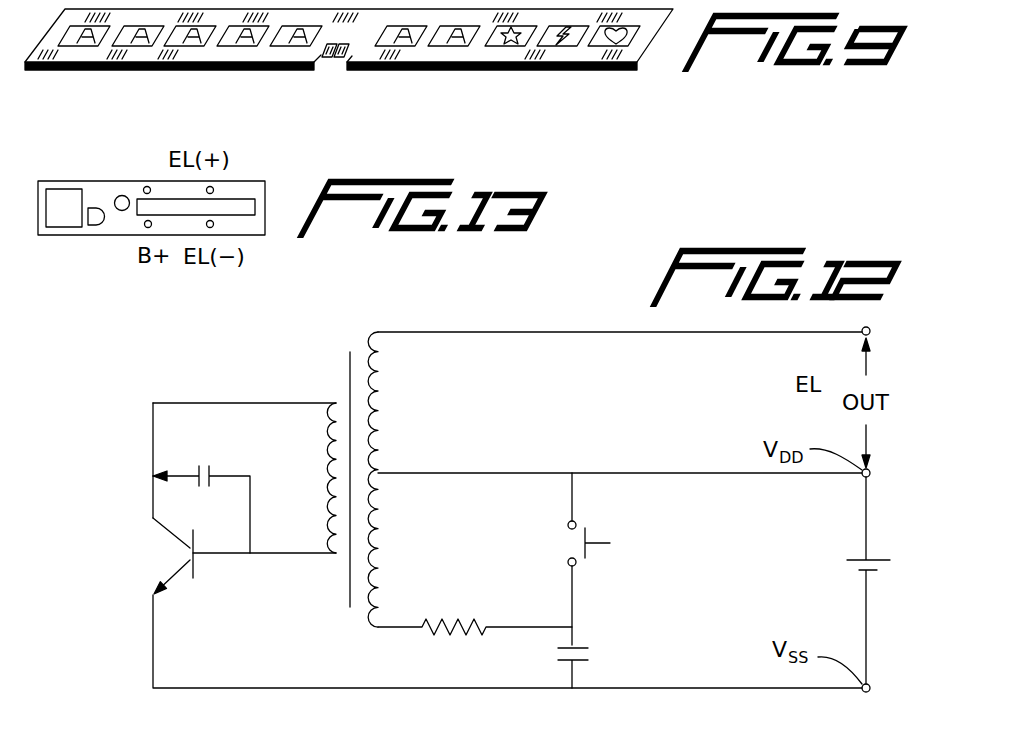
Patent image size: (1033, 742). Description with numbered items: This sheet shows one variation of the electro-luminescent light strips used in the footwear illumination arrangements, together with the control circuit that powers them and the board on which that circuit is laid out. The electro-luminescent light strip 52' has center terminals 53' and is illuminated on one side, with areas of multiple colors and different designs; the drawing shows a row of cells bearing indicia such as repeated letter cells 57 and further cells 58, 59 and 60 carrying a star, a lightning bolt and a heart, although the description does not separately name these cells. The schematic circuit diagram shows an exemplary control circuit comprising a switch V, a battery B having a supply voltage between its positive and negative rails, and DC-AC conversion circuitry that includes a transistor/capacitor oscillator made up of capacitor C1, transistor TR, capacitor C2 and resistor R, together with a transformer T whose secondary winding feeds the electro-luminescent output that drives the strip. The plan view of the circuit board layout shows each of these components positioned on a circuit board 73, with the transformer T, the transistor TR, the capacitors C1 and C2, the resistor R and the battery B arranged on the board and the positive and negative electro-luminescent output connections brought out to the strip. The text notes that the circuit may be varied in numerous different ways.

In FIG. 9, the electro-luminescent light strip 52' is at (377, 67).
In FIG. 9, the letter indicia cell 57 is at (108, 46).
In FIG. 9, the center terminals 53' is at (360, 93).
In FIG. 9, the star indicia cell 58 is at (492, 46).
In FIG. 9, the lightning indicia cell 59 is at (575, 46).
In FIG. 9, the heart indicia cell 60 is at (613, 46).
In FIG. 13, the circuit board 73 is at (63, 228).
In FIG. 13, the transformer T is at (64, 208).
In FIG. 12, the transformer T is at (352, 472).
In FIG. 13, the transistor TR is at (100, 226).
In FIG. 12, the transistor TR is at (160, 556).
In FIG. 13, the capacitor C1 is at (122, 196).
In FIG. 12, the capacitor C1 is at (201, 496).
In FIG. 13, the capacitor C2 is at (123, 211).
In FIG. 12, the capacitor C2 is at (592, 665).
In FIG. 13, the resistor R is at (85, 165).
In FIG. 12, the resistor R is at (475, 610).
In FIG. 13, the battery B is at (196, 190).
In FIG. 12, the battery B is at (856, 580).
In FIG. 12, the switch V is at (601, 559).